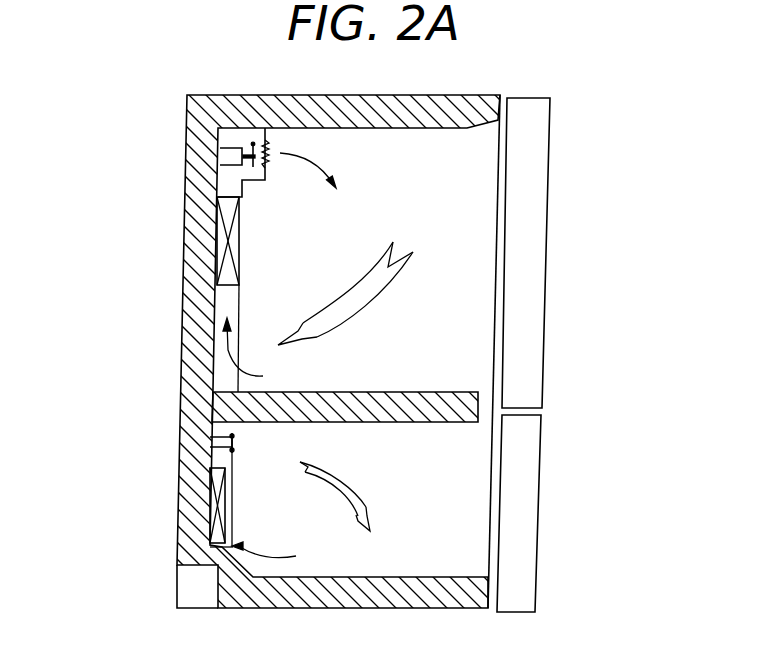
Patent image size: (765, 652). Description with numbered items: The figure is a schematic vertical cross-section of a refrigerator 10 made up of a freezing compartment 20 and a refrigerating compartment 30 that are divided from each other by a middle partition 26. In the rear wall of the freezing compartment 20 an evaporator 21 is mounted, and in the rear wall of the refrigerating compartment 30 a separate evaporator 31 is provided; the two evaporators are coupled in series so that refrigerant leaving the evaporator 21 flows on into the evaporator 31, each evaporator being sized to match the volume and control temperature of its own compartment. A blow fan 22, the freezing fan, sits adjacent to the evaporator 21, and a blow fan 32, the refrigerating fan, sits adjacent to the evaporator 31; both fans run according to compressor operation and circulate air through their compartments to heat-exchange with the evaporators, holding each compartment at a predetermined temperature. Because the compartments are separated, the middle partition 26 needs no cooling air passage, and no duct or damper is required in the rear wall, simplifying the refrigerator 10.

The refrigerator 10 is at (562, 136).
The freezing compartment 20 is at (397, 479).
The evaporator 21 is at (220, 495).
The blow fan 22 is at (220, 442).
The middle partition 26 is at (478, 412).
The refrigerating compartment 30 is at (375, 186).
The evaporator 31 is at (220, 237).
The blow fan 32 is at (220, 160).